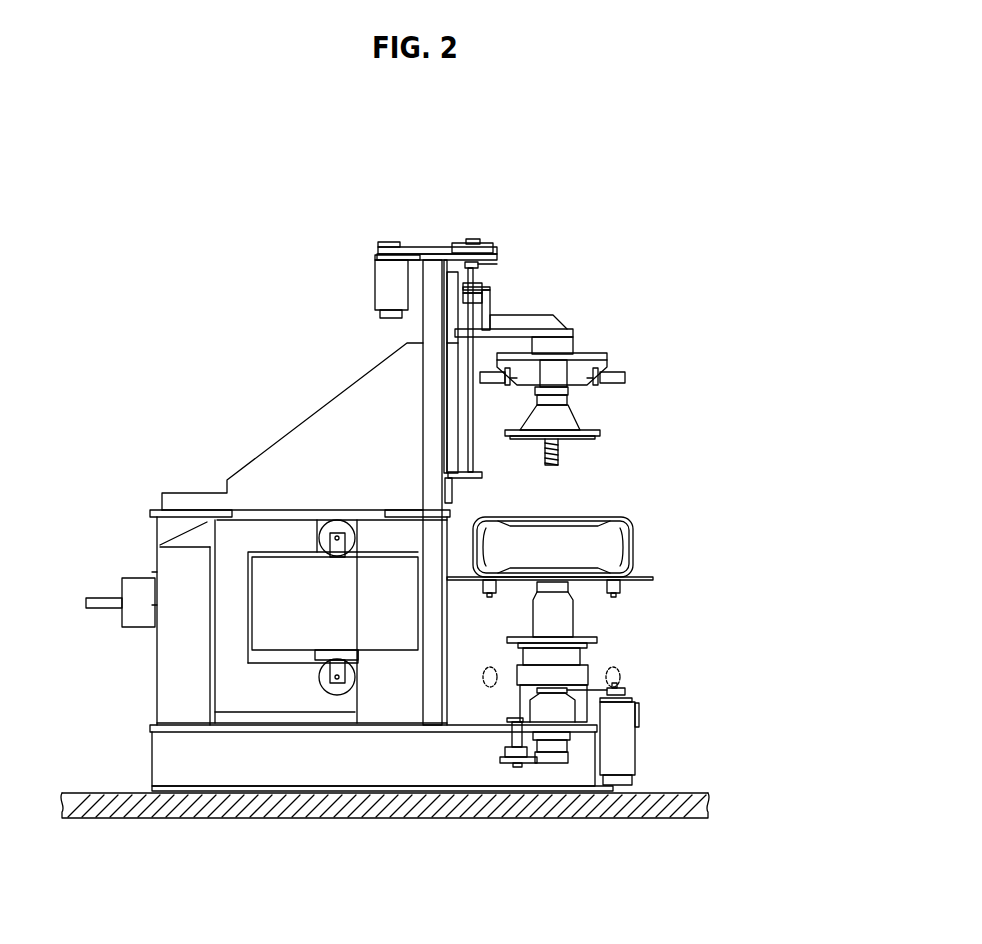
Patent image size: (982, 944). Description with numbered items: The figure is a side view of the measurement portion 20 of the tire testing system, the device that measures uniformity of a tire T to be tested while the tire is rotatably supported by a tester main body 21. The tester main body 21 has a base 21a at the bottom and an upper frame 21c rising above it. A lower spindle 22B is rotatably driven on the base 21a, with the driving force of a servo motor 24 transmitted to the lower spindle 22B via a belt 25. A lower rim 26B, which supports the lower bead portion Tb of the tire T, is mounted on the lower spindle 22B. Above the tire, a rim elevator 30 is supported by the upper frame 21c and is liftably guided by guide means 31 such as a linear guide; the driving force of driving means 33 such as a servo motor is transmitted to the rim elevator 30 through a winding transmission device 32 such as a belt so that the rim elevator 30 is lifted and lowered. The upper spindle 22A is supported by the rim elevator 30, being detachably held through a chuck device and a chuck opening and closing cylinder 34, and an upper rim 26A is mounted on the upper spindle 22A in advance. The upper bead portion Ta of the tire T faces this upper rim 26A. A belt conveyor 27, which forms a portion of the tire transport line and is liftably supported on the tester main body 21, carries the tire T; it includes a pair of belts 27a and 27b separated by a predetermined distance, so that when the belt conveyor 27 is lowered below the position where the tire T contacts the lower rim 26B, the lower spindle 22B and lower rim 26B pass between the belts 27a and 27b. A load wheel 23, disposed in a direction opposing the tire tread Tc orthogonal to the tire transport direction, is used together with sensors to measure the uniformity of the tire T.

The measurement portion 20 is at (211, 304).
The tester main body 21 is at (271, 443).
The base 21a is at (398, 770).
The upper frame 21c is at (427, 328).
The upper spindle 22A is at (557, 450).
The lower spindle 22B is at (562, 614).
The load wheel 23 is at (273, 587).
The servo motor 24 is at (620, 751).
The belt 25 is at (600, 701).
The upper rim 26A is at (603, 428).
The lower rim 26B is at (597, 639).
The belt conveyor 27 is at (628, 589).
The belt 27a is at (490, 598).
The belt 27b is at (615, 597).
The rim elevator 30 is at (533, 314).
The guide means 31 is at (453, 290).
The winding transmission device 32 is at (431, 255).
The driving means 33 is at (383, 276).
The chuck opening and closing cylinder 34 is at (615, 368).
The tire T is at (634, 522).
The upper bead portion Ta is at (522, 520).
The lower bead portion Tb is at (513, 570).
The tire tread Tc is at (636, 547).